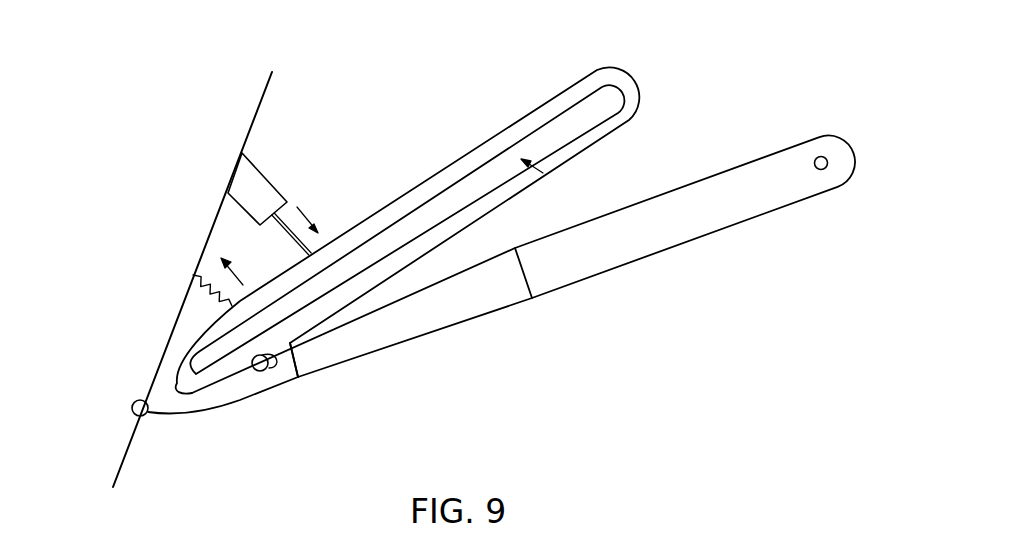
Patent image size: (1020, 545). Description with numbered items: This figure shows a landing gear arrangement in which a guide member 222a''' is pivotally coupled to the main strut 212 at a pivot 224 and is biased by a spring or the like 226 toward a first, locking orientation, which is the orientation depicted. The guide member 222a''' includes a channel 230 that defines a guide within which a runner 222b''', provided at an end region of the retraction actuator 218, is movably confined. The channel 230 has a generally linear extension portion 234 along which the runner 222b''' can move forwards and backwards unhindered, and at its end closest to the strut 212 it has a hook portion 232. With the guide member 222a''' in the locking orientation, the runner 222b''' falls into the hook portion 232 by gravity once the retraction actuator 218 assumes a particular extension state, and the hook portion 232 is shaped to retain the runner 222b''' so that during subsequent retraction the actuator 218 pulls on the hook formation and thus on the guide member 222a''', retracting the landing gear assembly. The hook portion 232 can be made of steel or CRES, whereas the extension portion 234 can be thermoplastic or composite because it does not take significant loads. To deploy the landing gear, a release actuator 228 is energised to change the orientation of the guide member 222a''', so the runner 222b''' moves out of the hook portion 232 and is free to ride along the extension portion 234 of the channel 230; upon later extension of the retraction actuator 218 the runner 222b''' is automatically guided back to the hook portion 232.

The main strut 212 is at (268, 92).
The release actuator 228 is at (268, 178).
The spring 226 is at (200, 287).
The pivot 224 is at (131, 402).
The guide member 222a''' is at (408, 225).
The extension portion 234 is at (420, 222).
The channel 230 is at (543, 173).
The runner 222b''' is at (340, 353).
The hook portion 232 is at (298, 378).
The retraction actuator 218 is at (657, 253).